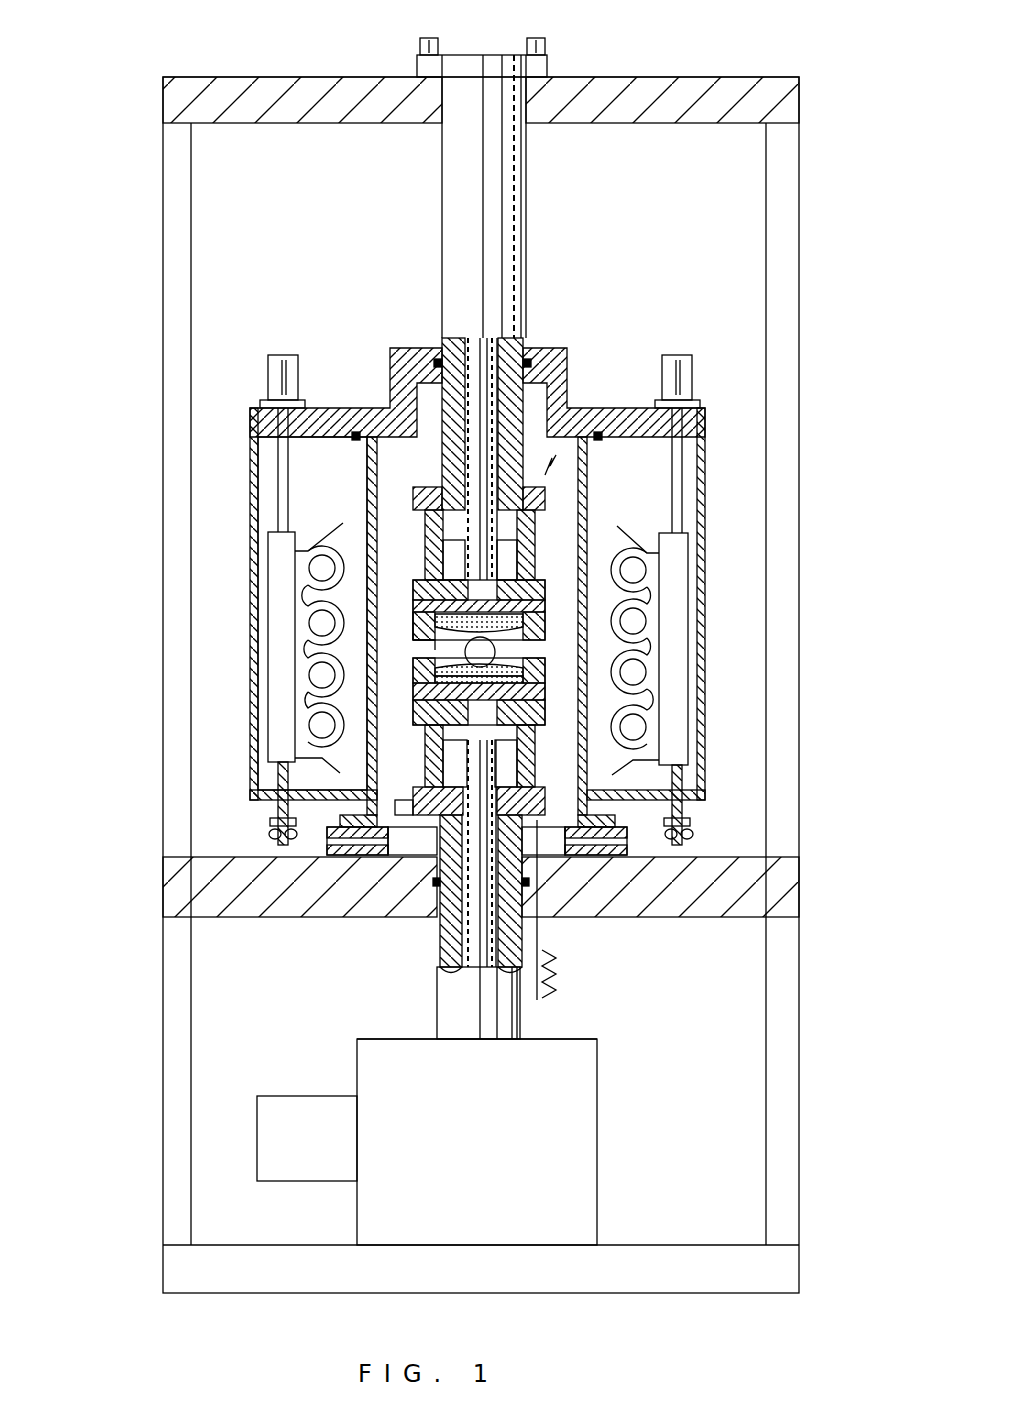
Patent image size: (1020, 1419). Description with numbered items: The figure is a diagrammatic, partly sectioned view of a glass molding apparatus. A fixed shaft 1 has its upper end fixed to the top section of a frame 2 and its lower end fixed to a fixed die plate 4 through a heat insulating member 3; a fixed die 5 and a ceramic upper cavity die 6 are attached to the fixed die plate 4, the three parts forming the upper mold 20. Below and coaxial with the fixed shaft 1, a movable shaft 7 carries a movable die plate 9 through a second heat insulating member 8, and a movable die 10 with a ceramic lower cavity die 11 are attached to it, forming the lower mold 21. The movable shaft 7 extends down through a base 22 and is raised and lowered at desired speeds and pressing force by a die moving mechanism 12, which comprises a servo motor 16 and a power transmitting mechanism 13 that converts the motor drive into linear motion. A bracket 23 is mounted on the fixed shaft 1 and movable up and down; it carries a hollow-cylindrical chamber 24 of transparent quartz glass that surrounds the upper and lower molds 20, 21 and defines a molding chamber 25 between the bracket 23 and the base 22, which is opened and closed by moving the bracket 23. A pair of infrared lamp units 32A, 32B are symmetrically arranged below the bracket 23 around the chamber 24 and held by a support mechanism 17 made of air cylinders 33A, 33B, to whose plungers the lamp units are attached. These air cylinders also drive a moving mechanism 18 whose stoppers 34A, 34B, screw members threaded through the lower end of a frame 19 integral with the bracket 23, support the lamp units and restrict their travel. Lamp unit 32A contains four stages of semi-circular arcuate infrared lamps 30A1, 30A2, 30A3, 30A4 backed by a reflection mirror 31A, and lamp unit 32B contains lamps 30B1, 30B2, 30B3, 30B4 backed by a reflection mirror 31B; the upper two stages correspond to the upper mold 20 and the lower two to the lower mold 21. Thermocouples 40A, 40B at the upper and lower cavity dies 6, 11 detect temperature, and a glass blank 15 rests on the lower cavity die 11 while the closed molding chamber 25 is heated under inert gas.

The fixed shaft 1 is at (527, 166).
The frame 2 is at (801, 158).
The heat insulating member 3 is at (545, 560).
The fixed die plate 4 is at (545, 595).
The fixed die 5 is at (545, 650).
The upper cavity die 6 is at (496, 652).
The movable shaft 7 is at (437, 985).
The heat insulating member 8 is at (540, 760).
The movable die plate 9 is at (545, 700).
The movable die 10 is at (545, 679).
The lower cavity die 11 is at (523, 666).
The die moving mechanism 12 is at (360, 1040).
The power transmitting mechanism 13 is at (597, 1155).
The glass blank 15 is at (413, 650).
The servo motor 16 is at (300, 1098).
The support mechanism 17 is at (264, 355).
The moving mechanism 18 is at (250, 460).
The frame 19 is at (250, 492).
The upper mold 20 is at (413, 620).
The lower mold 21 is at (411, 754).
The base 22 is at (678, 918).
The bracket 23 is at (605, 408).
The chamber 24 is at (365, 472).
The molding chamber 25 is at (414, 471).
The infrared lamp 30A1 is at (309, 570).
The infrared lamp 30A2 is at (309, 623).
The infrared lamp 30A3 is at (309, 675).
The infrared lamp 30A4 is at (309, 725).
The infrared lamp 30B1 is at (646, 570).
The infrared lamp 30B2 is at (646, 621).
The infrared lamp 30B3 is at (646, 672).
The infrared lamp 30B4 is at (646, 727).
The reflection mirror 31A is at (348, 548).
The reflection mirror 31B is at (614, 552).
The infrared lamp unit 32A is at (268, 546).
The infrared lamp unit 32B is at (688, 546).
The air cylinder 33A is at (283, 352).
The air cylinder 33B is at (677, 352).
The stopper 34A is at (270, 832).
The stopper 34B is at (688, 832).
The thermocouple 40A is at (560, 470).
The thermocouple 40B is at (548, 952).